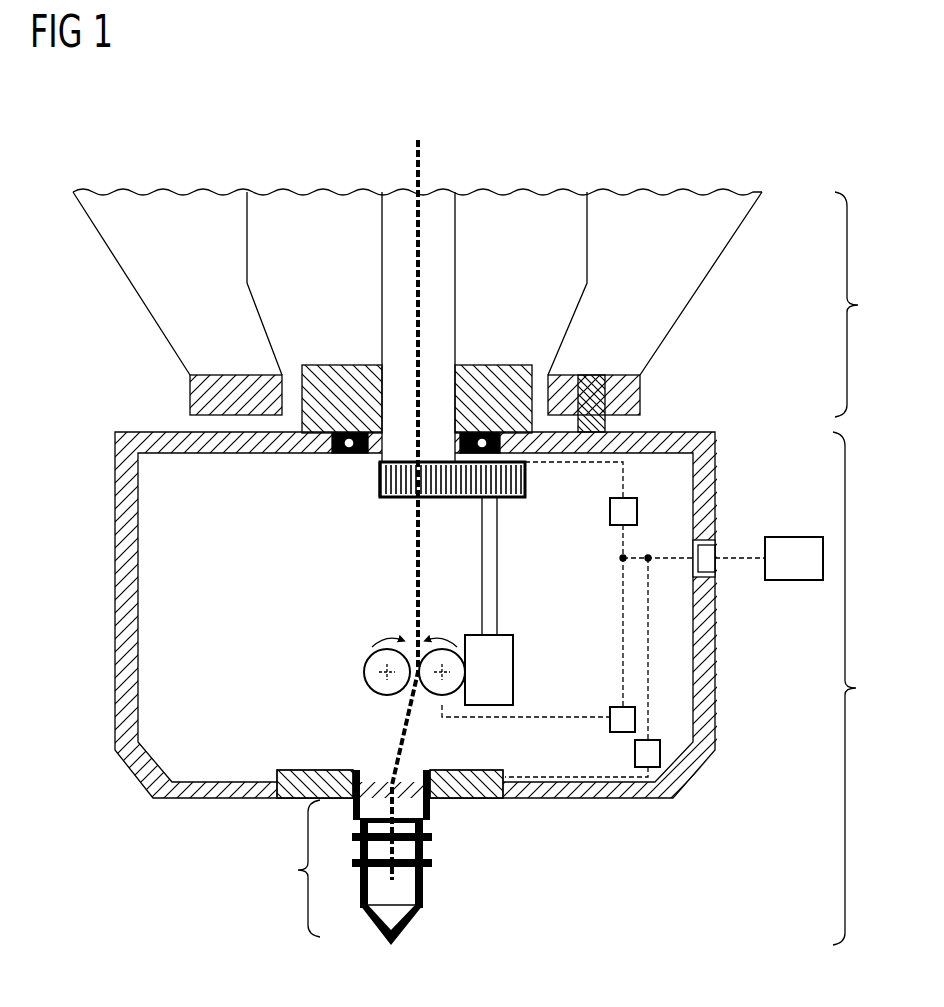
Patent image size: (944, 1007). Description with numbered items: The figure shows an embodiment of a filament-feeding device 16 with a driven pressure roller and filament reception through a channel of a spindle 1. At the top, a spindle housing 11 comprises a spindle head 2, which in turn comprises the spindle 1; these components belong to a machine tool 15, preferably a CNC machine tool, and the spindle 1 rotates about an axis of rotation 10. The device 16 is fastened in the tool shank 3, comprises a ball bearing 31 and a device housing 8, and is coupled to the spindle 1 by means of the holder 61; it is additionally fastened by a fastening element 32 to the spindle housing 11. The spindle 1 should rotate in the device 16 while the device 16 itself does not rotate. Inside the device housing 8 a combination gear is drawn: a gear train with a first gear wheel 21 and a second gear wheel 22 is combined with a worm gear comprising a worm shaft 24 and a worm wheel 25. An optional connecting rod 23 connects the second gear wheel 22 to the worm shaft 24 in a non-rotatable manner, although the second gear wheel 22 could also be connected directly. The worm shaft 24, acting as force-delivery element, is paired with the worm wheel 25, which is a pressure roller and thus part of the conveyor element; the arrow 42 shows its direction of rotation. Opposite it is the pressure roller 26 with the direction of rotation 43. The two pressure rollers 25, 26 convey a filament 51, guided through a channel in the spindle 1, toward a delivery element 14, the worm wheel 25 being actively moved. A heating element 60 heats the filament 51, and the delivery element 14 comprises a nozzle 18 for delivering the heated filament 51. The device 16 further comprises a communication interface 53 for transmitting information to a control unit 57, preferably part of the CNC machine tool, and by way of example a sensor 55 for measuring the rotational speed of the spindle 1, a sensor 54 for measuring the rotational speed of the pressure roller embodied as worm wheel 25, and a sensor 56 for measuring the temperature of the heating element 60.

The spindle 1 is at (396, 210).
The spindle head 2 is at (312, 209).
The tool shank 3 is at (316, 364).
The device housing 8 is at (115, 612).
The axis of rotation 10 is at (421, 152).
The spindle housing 11 is at (168, 209).
The delivery element 14 is at (290, 868).
The machine tool 15 is at (866, 304).
The device 16 is at (864, 688).
The nozzle 18 is at (396, 922).
The first gear wheel 21 is at (395, 499).
The second gear wheel 22 is at (527, 480).
The connecting rod 23 is at (499, 560).
The worm shaft 24 is at (515, 648).
The worm wheel 25 is at (441, 696).
The pressure roller 26 is at (383, 696).
The ball bearing 31 is at (349, 432).
The fastening element 32 is at (594, 393).
The arrow 42 is at (443, 634).
The direction of rotation 43 is at (386, 634).
The filament 51 is at (421, 266).
The communication interface 53 is at (704, 565).
The sensor 54 is at (610, 709).
The sensor 55 is at (637, 506).
The sensor 56 is at (635, 753).
The control unit 57 is at (789, 537).
The heating element 60 is at (340, 800).
The holder 61 is at (380, 465).